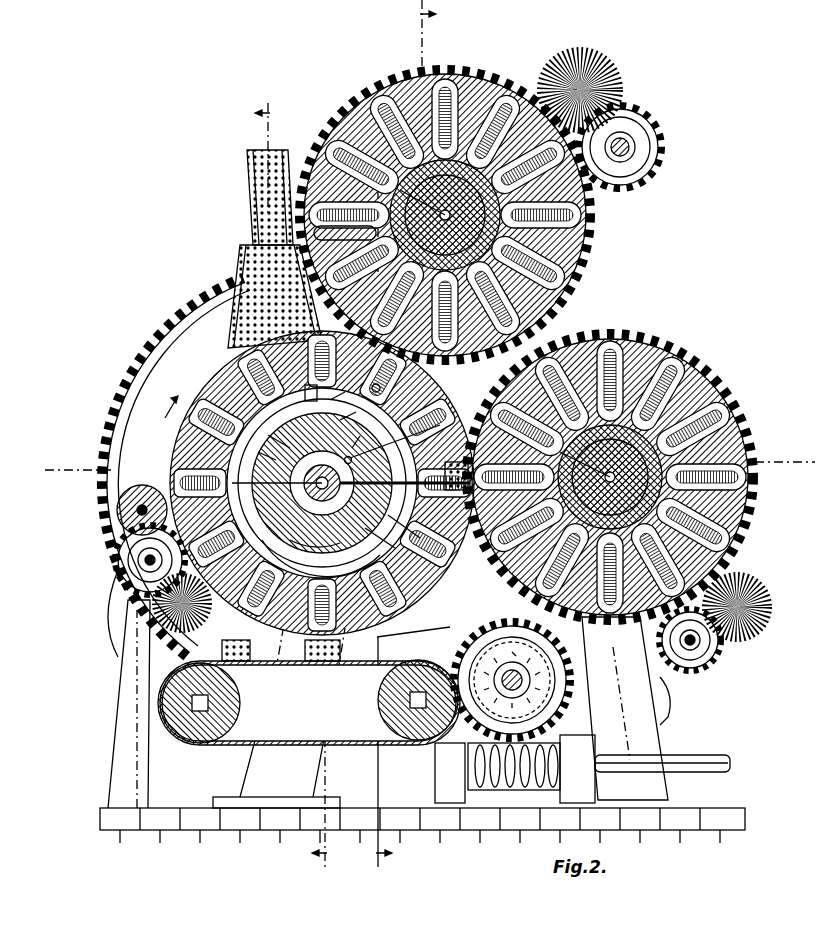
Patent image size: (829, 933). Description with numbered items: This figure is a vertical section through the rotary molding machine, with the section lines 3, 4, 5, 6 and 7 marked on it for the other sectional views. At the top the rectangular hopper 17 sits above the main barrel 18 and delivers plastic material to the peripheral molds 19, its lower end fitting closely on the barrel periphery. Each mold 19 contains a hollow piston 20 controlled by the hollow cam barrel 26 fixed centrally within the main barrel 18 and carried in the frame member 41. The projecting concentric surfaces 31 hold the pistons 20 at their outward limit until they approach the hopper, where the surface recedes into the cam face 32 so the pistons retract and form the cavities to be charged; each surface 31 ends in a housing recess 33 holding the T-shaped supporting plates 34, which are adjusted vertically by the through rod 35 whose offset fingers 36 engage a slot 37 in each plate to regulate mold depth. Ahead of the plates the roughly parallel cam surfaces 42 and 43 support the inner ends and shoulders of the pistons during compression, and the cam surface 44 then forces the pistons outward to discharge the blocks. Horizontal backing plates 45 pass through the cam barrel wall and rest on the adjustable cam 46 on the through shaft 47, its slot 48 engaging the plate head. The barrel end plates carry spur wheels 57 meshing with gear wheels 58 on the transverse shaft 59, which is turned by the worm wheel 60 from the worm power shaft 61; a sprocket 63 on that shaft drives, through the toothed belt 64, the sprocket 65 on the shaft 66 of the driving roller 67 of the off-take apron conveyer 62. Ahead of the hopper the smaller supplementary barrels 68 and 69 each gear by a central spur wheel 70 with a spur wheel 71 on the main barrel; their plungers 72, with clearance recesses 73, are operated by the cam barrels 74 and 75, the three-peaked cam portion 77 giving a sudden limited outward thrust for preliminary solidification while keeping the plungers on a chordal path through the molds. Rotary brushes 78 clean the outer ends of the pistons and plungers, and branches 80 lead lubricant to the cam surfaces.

The section line 3— 3 is at (297, 489).
The section line 4— 4 is at (406, 437).
The section line 5— 5 is at (430, 456).
The section line 6— 6 is at (322, 483).
The section line 7— 7 is at (317, 477).
The hopper 17 is at (246, 183).
The main barrel 18 is at (184, 468).
The molds 19 is at (180, 426).
The piston 20 is at (322, 483).
The cam barrel 26 is at (322, 483).
The projecting surfaces 31 is at (321, 556).
The cam face 32 is at (271, 432).
The housing recess 33 is at (259, 447).
The T-shaped supporting plates 34 is at (304, 399).
The through rod 35 is at (343, 447).
The offset fingers 36 is at (337, 463).
The slot 37 is at (342, 411).
The frame member 41 is at (276, 757).
The inner cam surface 42 is at (395, 435).
The outer cam surface 43 is at (405, 457).
The cam surface 44 is at (380, 538).
The backing plates 45 is at (404, 526).
The cam 46 is at (322, 483).
The through shaft 47 is at (280, 473).
The slot 48 is at (326, 498).
The spur wheels 57 is at (212, 308).
The gear wheels 58 is at (560, 648).
The transverse shaft 59 is at (512, 680).
The worm wheel 60 is at (570, 705).
The worm power shaft 61 is at (582, 769).
The off-take apron conveyer 62 is at (285, 661).
The sprocket 63 is at (508, 684).
The toothed belt 64 is at (466, 642).
The sprocket 65 is at (385, 718).
The shaft 66 is at (413, 643).
The driving roller 67 is at (400, 740).
The supplementary barrel 68 is at (600, 222).
The supplementary barrel 69 is at (597, 477).
The spur wheel 70 is at (498, 322).
The spur wheel 71 is at (593, 477).
The plungers 72 is at (472, 74).
The clearance recesses 73 is at (405, 75).
The cam barrel 74 is at (445, 205).
The cam barrel 75 is at (655, 508).
The cam portion 77 is at (345, 233).
The rotary brushes 78 is at (620, 84).
The branches 80 is at (372, 397).